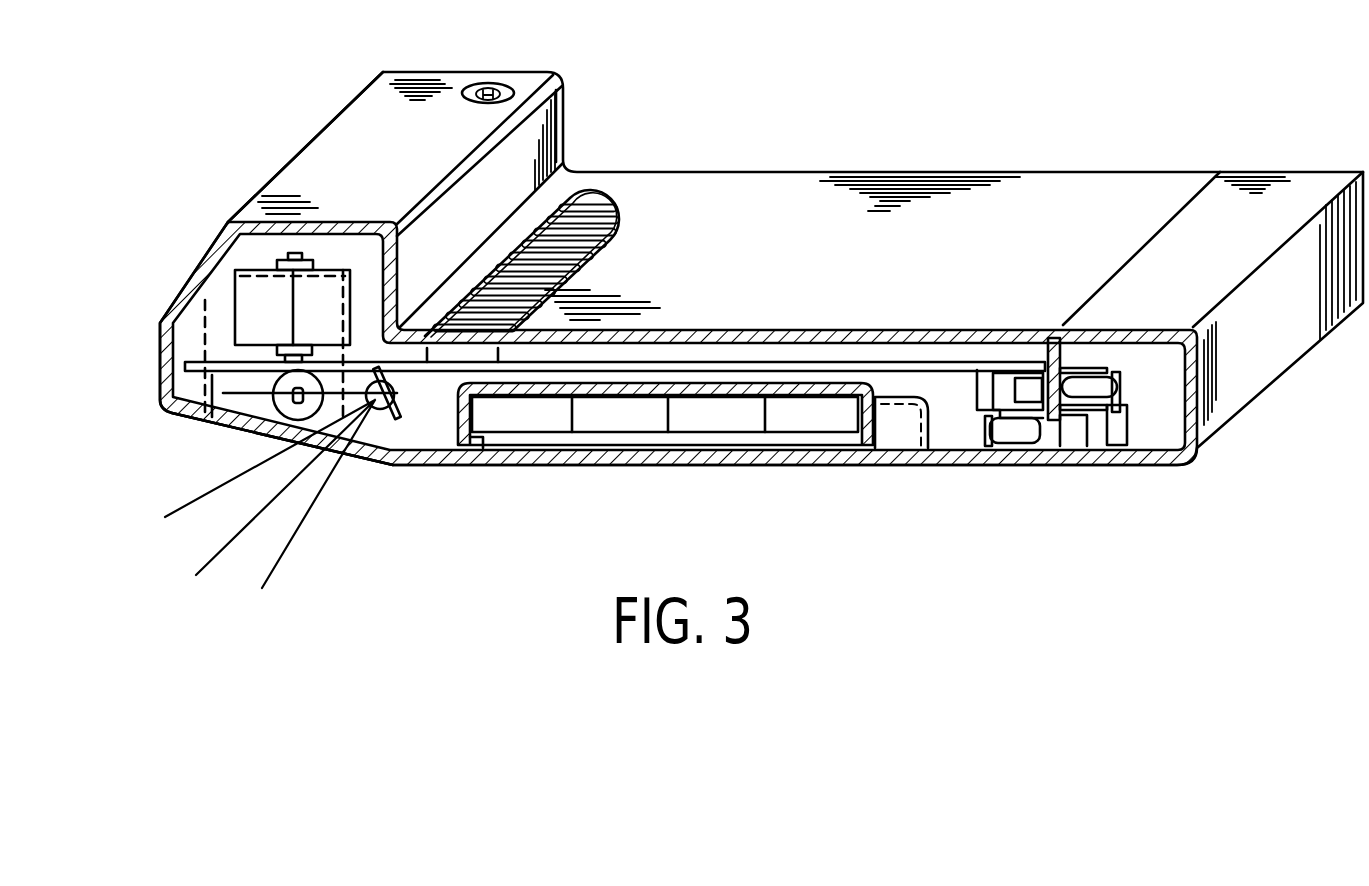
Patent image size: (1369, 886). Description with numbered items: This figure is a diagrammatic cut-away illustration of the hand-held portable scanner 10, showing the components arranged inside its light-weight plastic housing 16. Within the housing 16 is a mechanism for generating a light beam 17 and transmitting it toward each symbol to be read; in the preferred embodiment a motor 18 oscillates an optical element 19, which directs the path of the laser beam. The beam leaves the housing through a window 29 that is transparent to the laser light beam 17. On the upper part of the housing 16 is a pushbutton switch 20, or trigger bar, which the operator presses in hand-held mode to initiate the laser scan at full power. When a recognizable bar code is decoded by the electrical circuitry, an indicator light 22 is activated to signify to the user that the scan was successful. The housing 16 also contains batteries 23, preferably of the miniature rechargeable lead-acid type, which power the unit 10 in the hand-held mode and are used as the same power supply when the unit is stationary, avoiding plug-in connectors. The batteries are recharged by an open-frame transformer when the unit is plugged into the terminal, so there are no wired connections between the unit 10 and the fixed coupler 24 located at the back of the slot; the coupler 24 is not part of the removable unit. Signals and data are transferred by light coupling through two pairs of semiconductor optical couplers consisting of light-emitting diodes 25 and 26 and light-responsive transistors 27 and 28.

The portable scanner 10 is at (296, 156).
The housing 16 is at (278, 222).
The light beam 17 is at (293, 547).
The motor 18 is at (262, 310).
The optical element 19 is at (285, 405).
The pushbutton switch 20 is at (607, 194).
The indicator light 22 is at (489, 88).
The batteries 23 is at (714, 425).
The fixed coupler 24 is at (1283, 190).
The light-emitting diode 25 is at (1013, 430).
The light-emitting diode 26 is at (1103, 388).
The light-responsive transistor 27 is at (1075, 430).
The light-responsive transistor 28 is at (1027, 385).
The window 29 is at (370, 462).